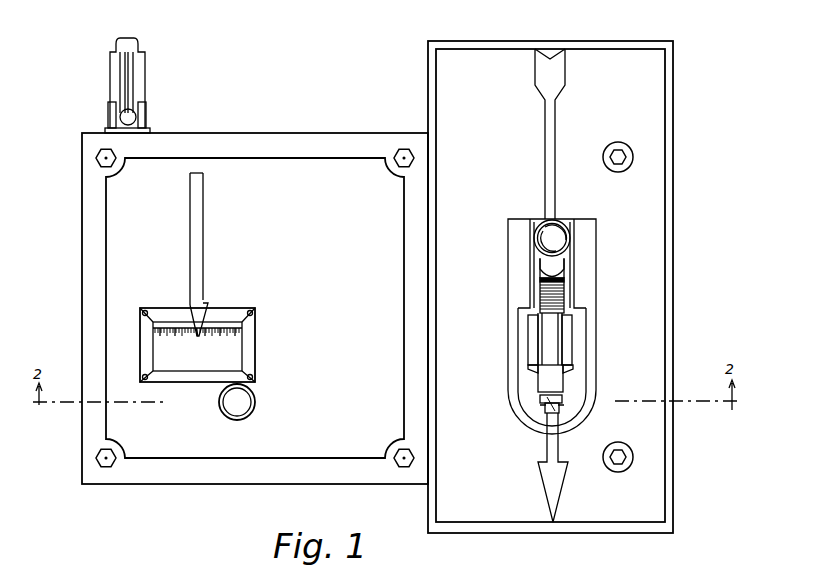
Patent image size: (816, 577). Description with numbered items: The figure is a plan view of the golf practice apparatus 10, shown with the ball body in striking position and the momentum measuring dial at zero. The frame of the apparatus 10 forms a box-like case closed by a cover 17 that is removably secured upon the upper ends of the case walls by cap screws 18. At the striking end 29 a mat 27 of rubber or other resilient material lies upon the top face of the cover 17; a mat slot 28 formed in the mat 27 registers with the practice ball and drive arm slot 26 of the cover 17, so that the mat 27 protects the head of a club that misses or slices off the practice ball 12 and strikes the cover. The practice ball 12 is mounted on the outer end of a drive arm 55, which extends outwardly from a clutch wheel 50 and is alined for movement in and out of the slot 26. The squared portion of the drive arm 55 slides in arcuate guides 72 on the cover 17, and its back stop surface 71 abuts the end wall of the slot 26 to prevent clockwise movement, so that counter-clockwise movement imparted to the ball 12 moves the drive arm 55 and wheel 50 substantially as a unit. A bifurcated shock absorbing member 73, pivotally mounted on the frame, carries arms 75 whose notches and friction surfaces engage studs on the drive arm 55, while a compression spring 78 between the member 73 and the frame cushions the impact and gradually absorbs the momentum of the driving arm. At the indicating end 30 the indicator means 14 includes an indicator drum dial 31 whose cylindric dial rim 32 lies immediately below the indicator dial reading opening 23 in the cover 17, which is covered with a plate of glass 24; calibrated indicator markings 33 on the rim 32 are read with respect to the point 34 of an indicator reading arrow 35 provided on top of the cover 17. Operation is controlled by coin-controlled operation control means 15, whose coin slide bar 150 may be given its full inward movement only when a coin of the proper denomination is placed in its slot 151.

The apparatus 10 is at (263, 485).
The practice ball 12 is at (557, 228).
The indicator means 14 is at (212, 303).
The operation control means 15 is at (145, 107).
The cover 17 is at (255, 308).
The cap screws 18 is at (117, 463).
The indicator dial reading opening 23 is at (238, 340).
The plate of glass 24 is at (235, 328).
The practice ball and drive arm slot 26 is at (545, 295).
The mat 27 is at (572, 326).
The mat slot 28 is at (572, 292).
The striking end 29 is at (677, 302).
The indicating end 30 is at (80, 347).
The indicator drum dial 31 is at (178, 363).
The cylindric dial rim 32 is at (162, 345).
The calibrated indicator markings 33 is at (163, 332).
The point of indicator reading arrow 34 is at (197, 330).
The indicator reading arrow 35 is at (203, 263).
The clutch wheel 50 is at (548, 315).
The drive arm 55 is at (560, 267).
The back stop surface 71 is at (540, 262).
The arcuate guides 72 is at (533, 340).
The shock absorbing member 73 is at (553, 400).
The arms 75 is at (568, 378).
The compression spring 78 is at (545, 413).
The coin slide bar 150 is at (117, 73).
The slot 151 is at (120, 118).